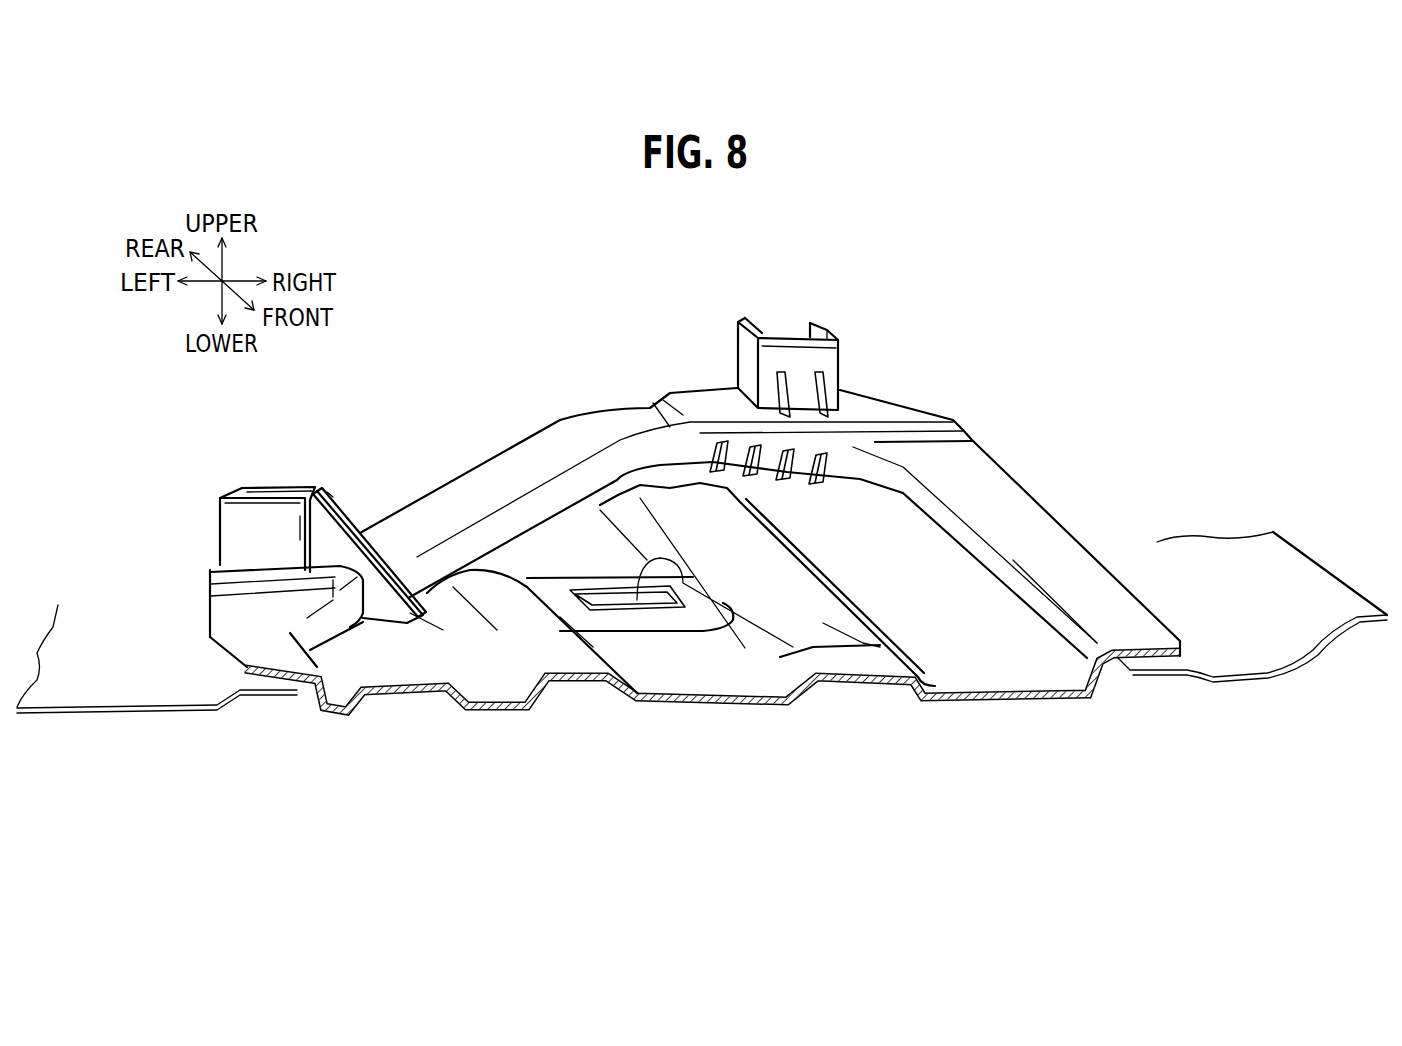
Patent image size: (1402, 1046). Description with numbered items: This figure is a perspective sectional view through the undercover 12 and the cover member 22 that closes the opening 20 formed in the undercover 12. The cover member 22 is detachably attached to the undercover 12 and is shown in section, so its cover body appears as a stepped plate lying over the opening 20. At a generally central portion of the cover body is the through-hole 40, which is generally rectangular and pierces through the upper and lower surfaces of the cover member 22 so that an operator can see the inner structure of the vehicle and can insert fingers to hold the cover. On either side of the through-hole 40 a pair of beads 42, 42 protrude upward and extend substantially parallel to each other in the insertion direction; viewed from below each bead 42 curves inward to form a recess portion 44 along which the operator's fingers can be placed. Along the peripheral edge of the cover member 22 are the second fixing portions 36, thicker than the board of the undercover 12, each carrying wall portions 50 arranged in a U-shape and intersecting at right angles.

The undercover 12 is at (114, 736).
The opening 20 is at (295, 693).
The cover member 22 is at (718, 708).
The second fixing portion 36 is at (207, 577).
The through-hole 40 is at (690, 597).
The bead 42 is at (578, 637).
The recess portion 44 is at (545, 635).
The wall portion 50 is at (306, 500).